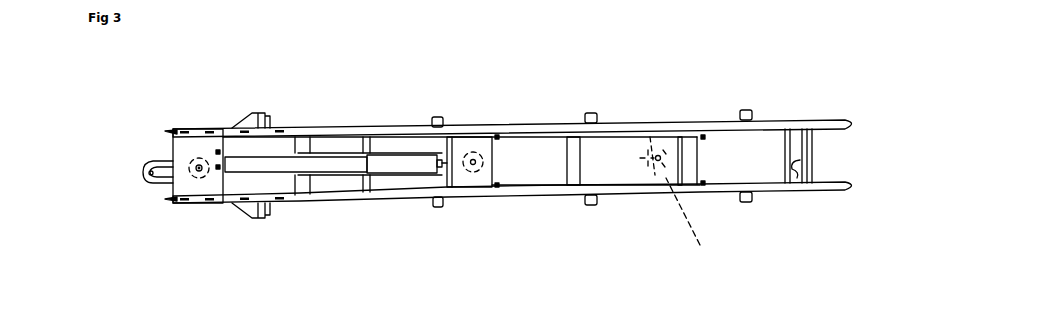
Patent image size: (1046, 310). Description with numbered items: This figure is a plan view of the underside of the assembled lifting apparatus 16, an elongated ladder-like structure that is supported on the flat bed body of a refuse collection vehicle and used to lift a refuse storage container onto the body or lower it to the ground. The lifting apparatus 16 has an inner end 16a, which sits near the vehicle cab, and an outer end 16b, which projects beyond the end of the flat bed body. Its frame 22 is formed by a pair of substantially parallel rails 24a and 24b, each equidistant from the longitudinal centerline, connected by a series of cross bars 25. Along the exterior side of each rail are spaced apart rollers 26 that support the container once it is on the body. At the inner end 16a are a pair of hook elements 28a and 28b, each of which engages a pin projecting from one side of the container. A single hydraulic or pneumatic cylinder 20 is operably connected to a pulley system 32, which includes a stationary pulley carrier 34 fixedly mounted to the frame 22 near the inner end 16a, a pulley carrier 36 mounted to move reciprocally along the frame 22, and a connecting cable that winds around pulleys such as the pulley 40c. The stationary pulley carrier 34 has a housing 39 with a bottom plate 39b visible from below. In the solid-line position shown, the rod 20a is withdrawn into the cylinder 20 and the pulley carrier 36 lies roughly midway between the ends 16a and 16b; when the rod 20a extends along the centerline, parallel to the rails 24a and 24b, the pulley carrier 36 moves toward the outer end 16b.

The lifting apparatus 16 is at (222, 240).
The inner end 16a is at (193, 128).
The outer end 16b is at (845, 193).
The cylinder 20 is at (404, 124).
The rod 20a is at (450, 192).
The frame 22 is at (500, 90).
The rail 24a is at (563, 202).
The rail 24b is at (322, 130).
The cross bars 25 is at (298, 185).
The rollers 26 is at (442, 118).
The hook element 28a is at (175, 198).
The hook element 28b is at (165, 131).
The pulley system 32 is at (520, 187).
The stationary pulley carrier 34 is at (203, 200).
The pulley carrier 36 is at (485, 190).
The housing 39 is at (183, 150).
The bottom plate 39b is at (215, 147).
The pulley 40c is at (695, 221).